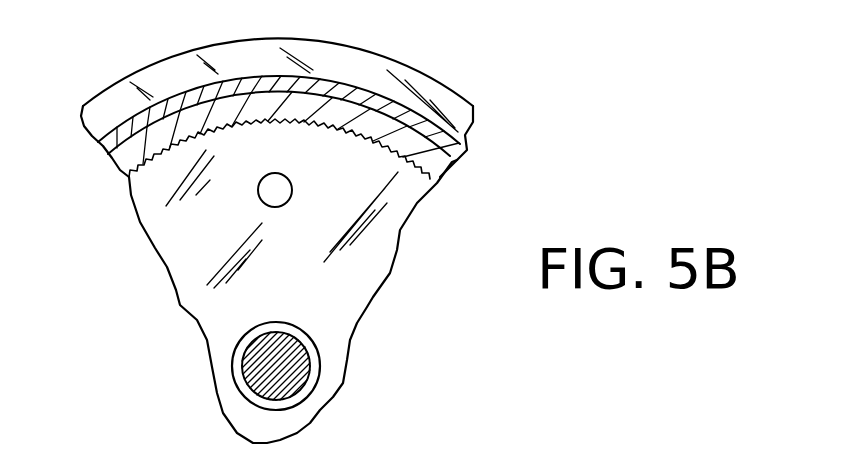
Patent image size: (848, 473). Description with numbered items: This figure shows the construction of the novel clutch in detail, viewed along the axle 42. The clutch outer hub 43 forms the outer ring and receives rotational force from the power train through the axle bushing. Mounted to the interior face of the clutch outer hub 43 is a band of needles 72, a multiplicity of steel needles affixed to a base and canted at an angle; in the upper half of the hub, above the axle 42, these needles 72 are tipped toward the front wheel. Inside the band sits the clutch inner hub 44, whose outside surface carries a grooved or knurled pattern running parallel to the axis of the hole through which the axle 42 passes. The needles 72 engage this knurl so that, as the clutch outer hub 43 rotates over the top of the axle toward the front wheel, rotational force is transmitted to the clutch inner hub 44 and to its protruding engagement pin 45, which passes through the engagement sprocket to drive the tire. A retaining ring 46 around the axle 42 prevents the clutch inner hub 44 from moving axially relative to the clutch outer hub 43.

The axle 42 is at (243, 375).
The clutch outer hub 43 is at (123, 80).
The clutch inner hub 44 is at (412, 193).
The clutch engagement pin 45 is at (258, 190).
The retaining ring 46 is at (238, 340).
The needles 72 is at (138, 150).